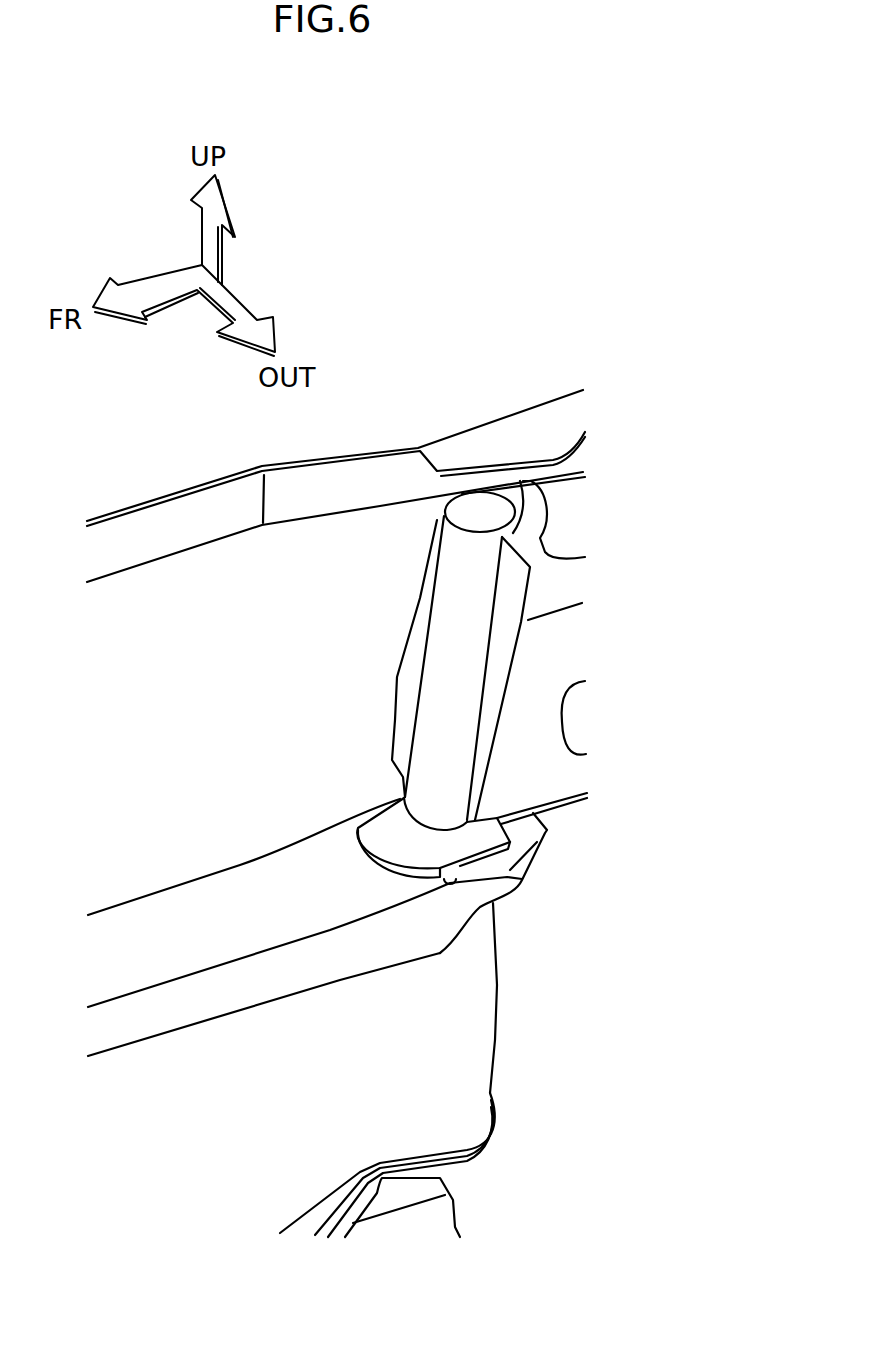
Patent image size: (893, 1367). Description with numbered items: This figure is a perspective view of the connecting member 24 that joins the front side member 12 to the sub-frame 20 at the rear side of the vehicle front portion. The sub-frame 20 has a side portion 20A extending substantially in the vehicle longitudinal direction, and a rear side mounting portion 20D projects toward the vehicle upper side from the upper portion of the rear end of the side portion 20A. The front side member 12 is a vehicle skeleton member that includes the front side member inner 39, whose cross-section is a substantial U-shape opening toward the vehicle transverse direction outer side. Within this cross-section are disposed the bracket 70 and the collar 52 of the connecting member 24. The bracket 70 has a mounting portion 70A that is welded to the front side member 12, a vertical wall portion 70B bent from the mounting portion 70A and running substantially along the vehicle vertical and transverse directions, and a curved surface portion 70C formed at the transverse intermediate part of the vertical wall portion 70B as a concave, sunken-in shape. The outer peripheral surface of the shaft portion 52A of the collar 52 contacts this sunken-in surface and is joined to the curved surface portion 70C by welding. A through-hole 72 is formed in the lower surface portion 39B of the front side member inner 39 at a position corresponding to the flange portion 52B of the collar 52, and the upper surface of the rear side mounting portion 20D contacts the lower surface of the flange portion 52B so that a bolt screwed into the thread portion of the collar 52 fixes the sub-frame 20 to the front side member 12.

The front side member 12 is at (336, 457).
The front side member inner 39 is at (477, 427).
The lower surface portion 39B is at (213, 933).
The bracket 70 is at (568, 558).
The mounting portion 70A is at (555, 645).
The vertical wall portion 70B is at (493, 663).
The curved surface portion 70C is at (517, 521).
The collar 52 is at (453, 612).
The shaft portion 52A is at (452, 576).
The flange portion 52B is at (398, 842).
The connecting member 24 is at (382, 697).
The through-hole 72 is at (447, 884).
The sub-frame 20 is at (497, 1053).
The side portion 20A is at (397, 1113).
The rear side mounting portion 20D is at (492, 908).